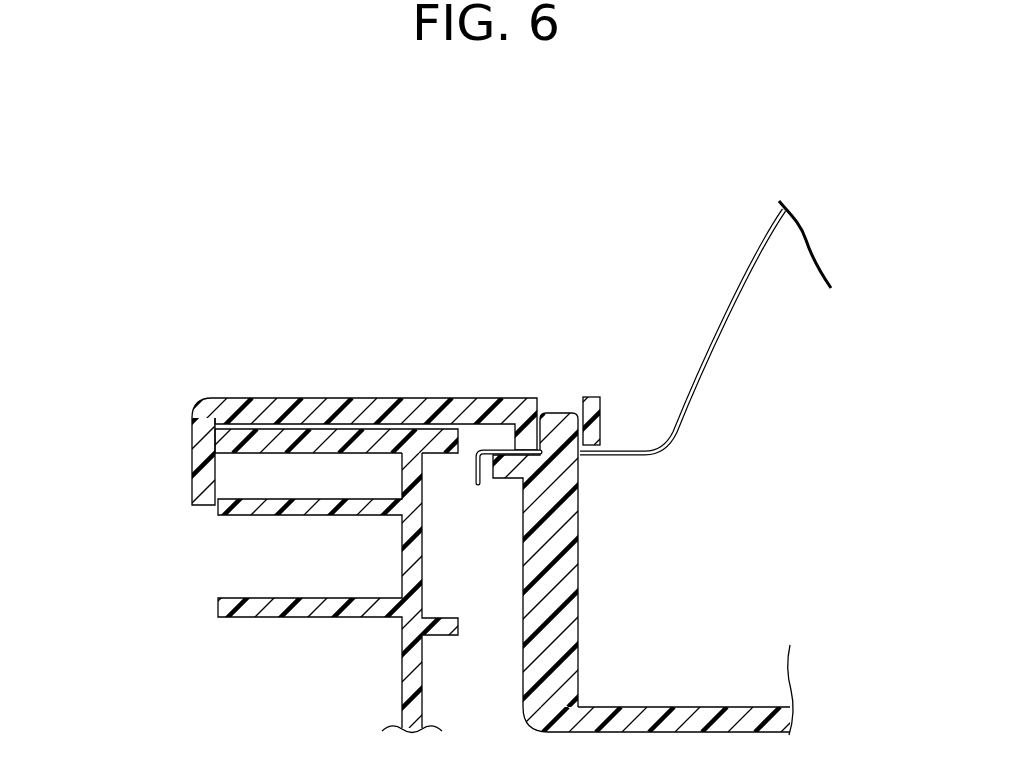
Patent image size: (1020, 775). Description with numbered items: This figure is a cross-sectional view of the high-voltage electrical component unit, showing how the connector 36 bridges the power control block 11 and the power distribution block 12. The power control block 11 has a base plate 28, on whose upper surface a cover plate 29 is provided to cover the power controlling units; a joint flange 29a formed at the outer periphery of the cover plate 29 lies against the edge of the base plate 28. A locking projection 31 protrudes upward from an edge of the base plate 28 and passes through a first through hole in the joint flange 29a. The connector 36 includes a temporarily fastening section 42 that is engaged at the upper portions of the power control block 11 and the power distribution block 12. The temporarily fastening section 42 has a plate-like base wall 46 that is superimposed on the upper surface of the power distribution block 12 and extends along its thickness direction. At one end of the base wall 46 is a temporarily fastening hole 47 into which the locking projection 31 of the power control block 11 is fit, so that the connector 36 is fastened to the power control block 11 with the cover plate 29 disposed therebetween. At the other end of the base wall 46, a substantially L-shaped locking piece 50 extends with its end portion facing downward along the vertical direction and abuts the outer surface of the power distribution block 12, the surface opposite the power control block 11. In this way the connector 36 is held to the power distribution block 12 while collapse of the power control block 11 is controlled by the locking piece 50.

The power control block 11 is at (459, 430).
The power distribution block 12 is at (347, 491).
The base plate 28 is at (690, 706).
The cover plate 29 is at (769, 226).
The joint flange 29a is at (490, 450).
The locking projection 31 is at (550, 413).
The connector 36 is at (383, 381).
The temporarily fastening section 42 is at (207, 398).
The base wall 46 is at (278, 398).
The temporarily fastening hole 47 is at (578, 405).
The locking piece 50 is at (196, 463).